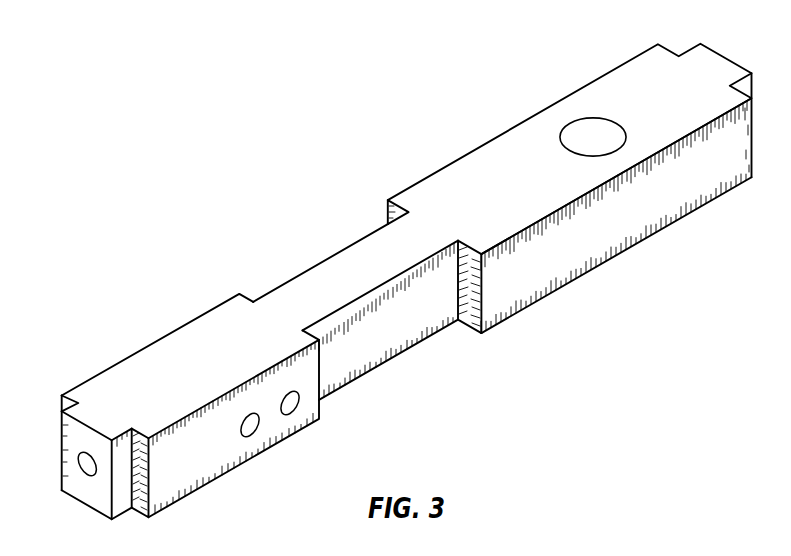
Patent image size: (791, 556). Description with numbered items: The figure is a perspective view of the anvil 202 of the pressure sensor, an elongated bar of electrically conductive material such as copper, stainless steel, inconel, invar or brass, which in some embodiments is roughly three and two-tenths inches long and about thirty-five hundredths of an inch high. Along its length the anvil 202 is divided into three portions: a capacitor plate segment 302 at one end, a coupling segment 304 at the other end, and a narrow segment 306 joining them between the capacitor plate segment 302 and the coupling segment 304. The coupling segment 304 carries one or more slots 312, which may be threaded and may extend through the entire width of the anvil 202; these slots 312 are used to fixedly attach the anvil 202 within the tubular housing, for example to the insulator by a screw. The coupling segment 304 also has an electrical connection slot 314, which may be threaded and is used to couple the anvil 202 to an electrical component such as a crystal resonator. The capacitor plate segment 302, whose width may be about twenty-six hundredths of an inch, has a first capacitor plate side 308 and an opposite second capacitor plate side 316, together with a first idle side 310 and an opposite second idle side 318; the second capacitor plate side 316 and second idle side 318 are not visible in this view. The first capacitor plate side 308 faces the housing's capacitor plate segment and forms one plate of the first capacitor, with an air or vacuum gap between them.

The anvil 202 is at (119, 84).
The capacitor plate segment 302 is at (529, 120).
The coupling segment 304 is at (157, 342).
The narrow segment 306 is at (333, 250).
The first capacitor plate side 308 is at (665, 207).
The first idle side 310 is at (624, 82).
The slots 312 is at (256, 429).
The electrical connection slot 314 is at (78, 466).
The second capacitor plate side 316 is at (448, 163).
The second idle side 318 is at (619, 255).